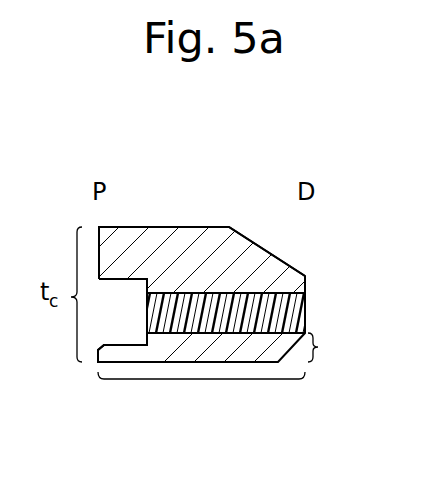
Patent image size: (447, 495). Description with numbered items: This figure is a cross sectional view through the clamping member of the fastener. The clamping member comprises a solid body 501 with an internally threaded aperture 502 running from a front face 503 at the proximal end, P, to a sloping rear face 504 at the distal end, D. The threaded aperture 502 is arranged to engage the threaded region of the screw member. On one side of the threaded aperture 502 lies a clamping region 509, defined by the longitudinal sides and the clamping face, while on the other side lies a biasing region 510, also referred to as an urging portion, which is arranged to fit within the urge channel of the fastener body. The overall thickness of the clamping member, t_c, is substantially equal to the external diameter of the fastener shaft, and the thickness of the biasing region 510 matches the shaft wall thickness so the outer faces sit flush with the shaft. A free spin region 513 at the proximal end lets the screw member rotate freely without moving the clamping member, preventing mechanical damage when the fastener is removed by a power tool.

The solid body 501 is at (140, 238).
The internally threaded aperture 502 is at (263, 308).
The front face 503 is at (102, 347).
The sloping rear face 504 is at (292, 347).
The clamping region 509 is at (193, 200).
The biasing region 510 is at (235, 376).
The free spin region 513 is at (270, 253).